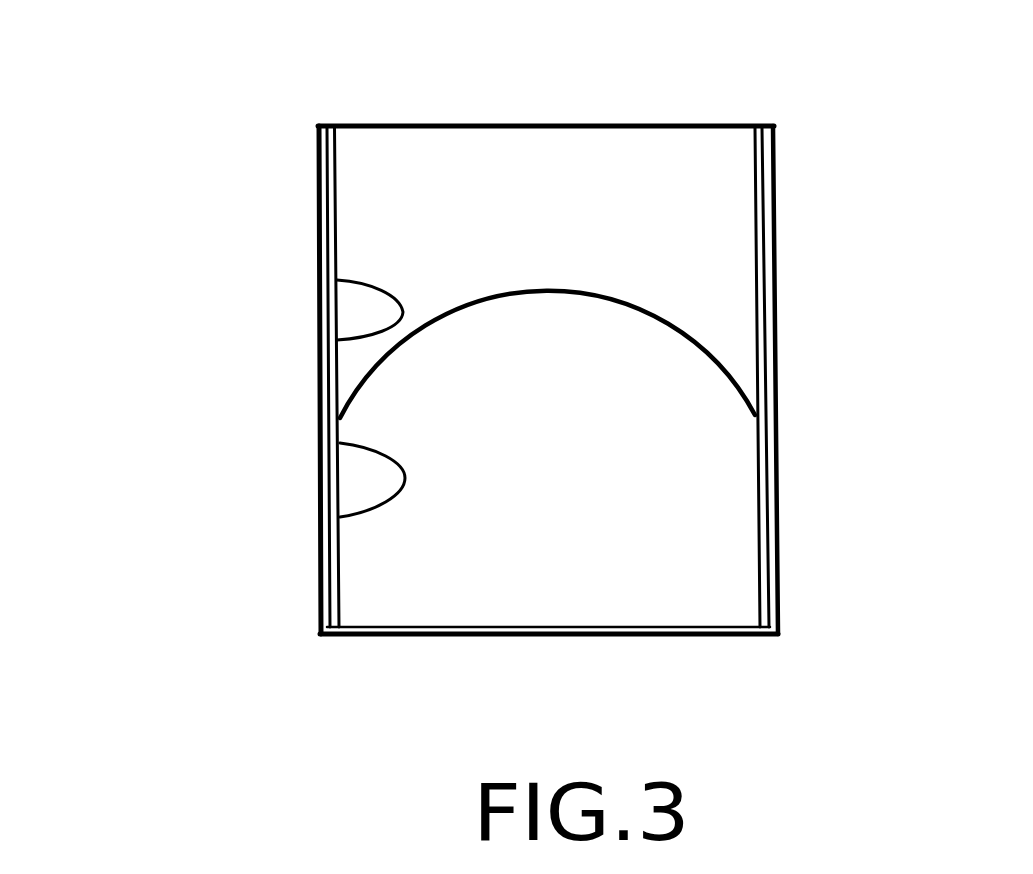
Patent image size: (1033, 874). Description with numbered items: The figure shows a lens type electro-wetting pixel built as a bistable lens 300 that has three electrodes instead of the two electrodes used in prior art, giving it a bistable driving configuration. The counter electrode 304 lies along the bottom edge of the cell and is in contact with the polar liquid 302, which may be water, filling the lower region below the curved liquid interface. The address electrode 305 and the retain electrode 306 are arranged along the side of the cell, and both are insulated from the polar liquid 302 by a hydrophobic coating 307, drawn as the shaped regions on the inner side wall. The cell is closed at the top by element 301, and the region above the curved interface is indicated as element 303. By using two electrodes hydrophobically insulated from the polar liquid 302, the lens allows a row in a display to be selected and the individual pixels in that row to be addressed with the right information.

The bistable lens 300 is at (256, 141).
The top edge 301 is at (610, 124).
The polar liquid 302 is at (657, 483).
The upper compartment 303 is at (657, 202).
The counter electrode 304 is at (571, 620).
The address electrode 305 is at (320, 573).
The retain electrode 306 is at (320, 242).
The hydrophobic coating 307 is at (340, 338).